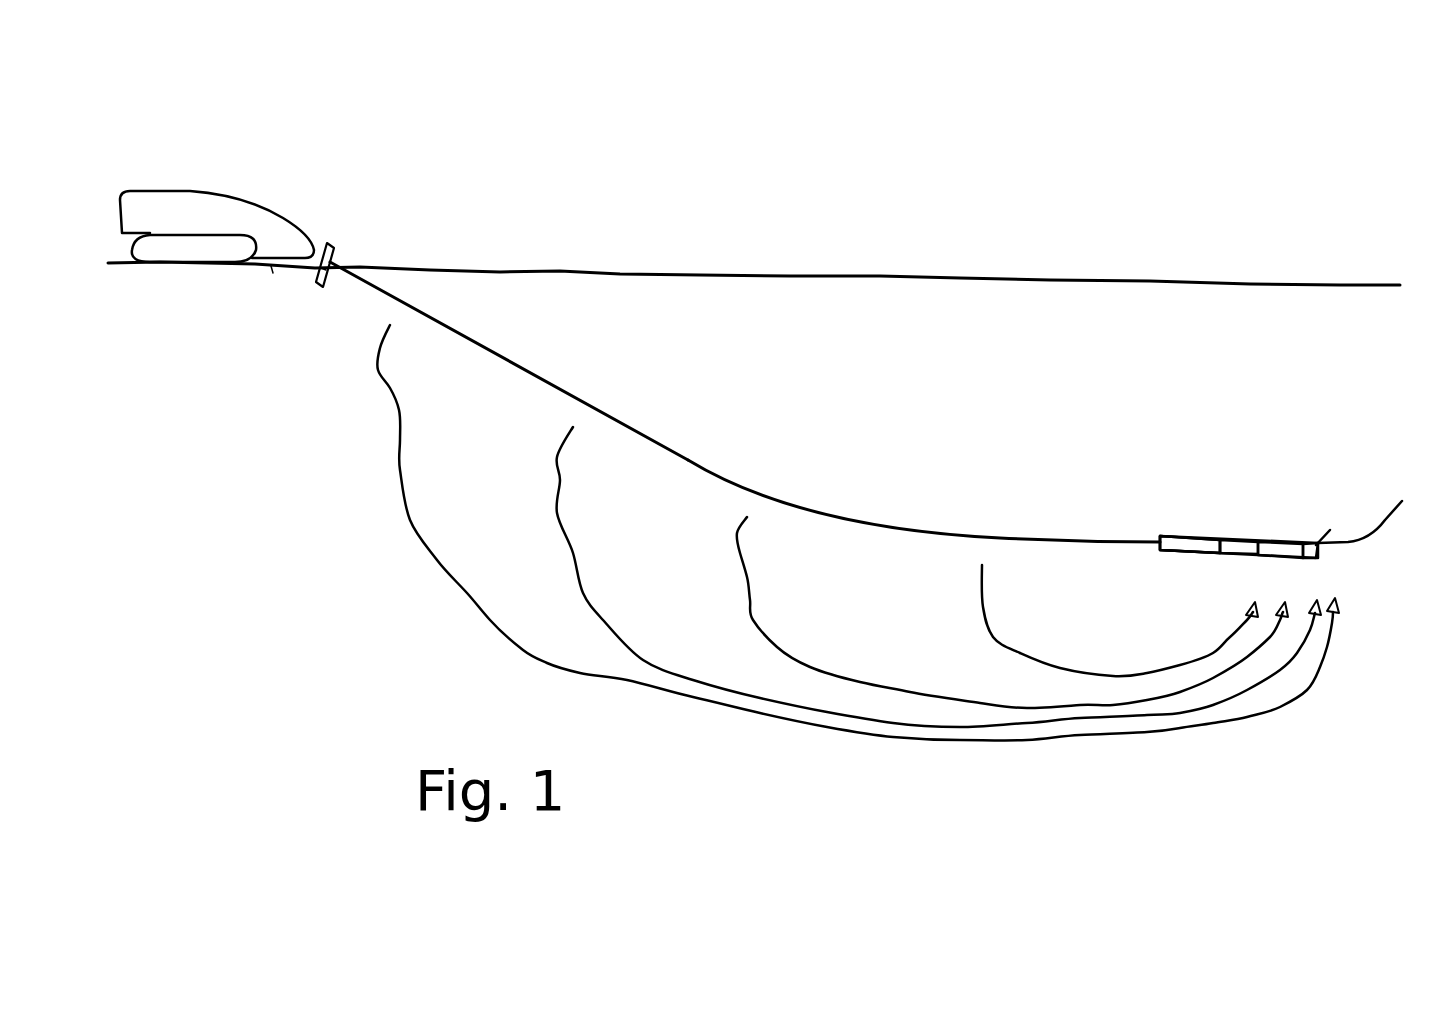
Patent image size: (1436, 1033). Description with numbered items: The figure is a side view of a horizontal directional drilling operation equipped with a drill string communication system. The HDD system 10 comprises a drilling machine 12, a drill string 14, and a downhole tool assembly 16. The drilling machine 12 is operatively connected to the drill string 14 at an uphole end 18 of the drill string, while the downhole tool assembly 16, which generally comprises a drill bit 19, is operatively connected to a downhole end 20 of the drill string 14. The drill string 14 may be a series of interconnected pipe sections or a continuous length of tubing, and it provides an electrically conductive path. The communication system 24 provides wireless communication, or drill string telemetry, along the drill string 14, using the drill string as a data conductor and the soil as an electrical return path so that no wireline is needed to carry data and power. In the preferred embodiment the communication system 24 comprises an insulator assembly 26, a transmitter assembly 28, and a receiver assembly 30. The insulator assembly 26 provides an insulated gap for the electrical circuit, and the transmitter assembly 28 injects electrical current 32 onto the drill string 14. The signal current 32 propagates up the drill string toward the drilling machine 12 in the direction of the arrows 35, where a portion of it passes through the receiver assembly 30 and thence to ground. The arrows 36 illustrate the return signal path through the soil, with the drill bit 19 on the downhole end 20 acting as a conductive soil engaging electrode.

The HDD system 10 is at (303, 135).
The drilling machine 12 is at (181, 190).
The drill string 14 is at (512, 361).
The downhole tool assembly 16 is at (1300, 540).
The uphole end 18 is at (372, 287).
The drill bit 19 is at (1373, 506).
The downhole end 20 is at (1115, 540).
The communication system 24 is at (1172, 478).
The insulator assembly 26 is at (1183, 554).
The transmitter assembly 28 is at (1232, 554).
The receiver assembly 30 is at (335, 249).
The electrical current 32 is at (688, 460).
The arrows 35 is at (400, 283).
The arrows 36 is at (858, 532).